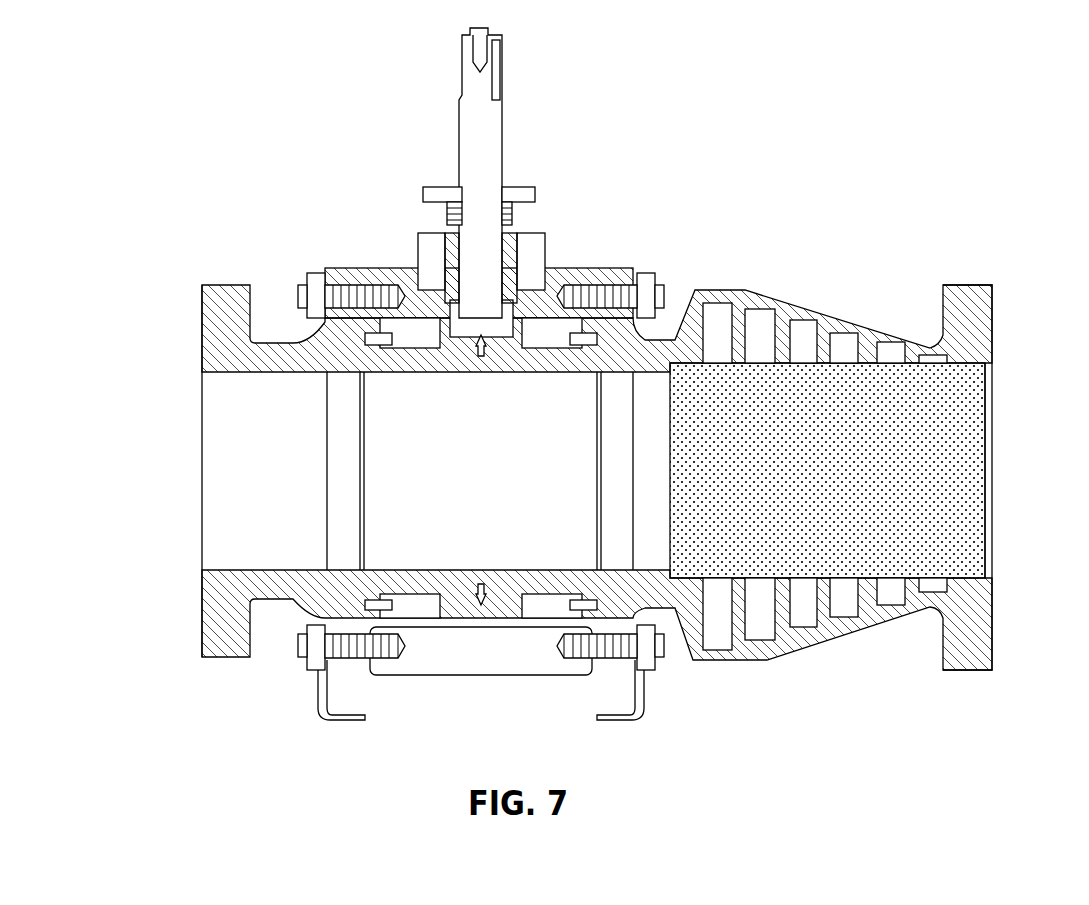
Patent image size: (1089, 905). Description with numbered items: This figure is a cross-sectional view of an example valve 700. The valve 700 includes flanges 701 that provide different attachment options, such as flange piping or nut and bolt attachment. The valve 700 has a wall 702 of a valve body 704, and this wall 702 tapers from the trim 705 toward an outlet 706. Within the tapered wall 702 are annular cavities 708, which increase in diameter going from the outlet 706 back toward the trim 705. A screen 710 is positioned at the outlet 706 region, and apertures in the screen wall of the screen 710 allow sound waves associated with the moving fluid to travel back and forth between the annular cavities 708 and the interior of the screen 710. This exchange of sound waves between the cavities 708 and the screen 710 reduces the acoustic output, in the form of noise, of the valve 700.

The valve 700 is at (122, 92).
The flanges 701 is at (992, 310).
The wall 702 is at (876, 625).
The valve body 704 is at (202, 358).
The trim 705 is at (358, 483).
The outlet 706 is at (993, 445).
The annular cavities 708 is at (932, 355).
The screen 710 is at (952, 362).